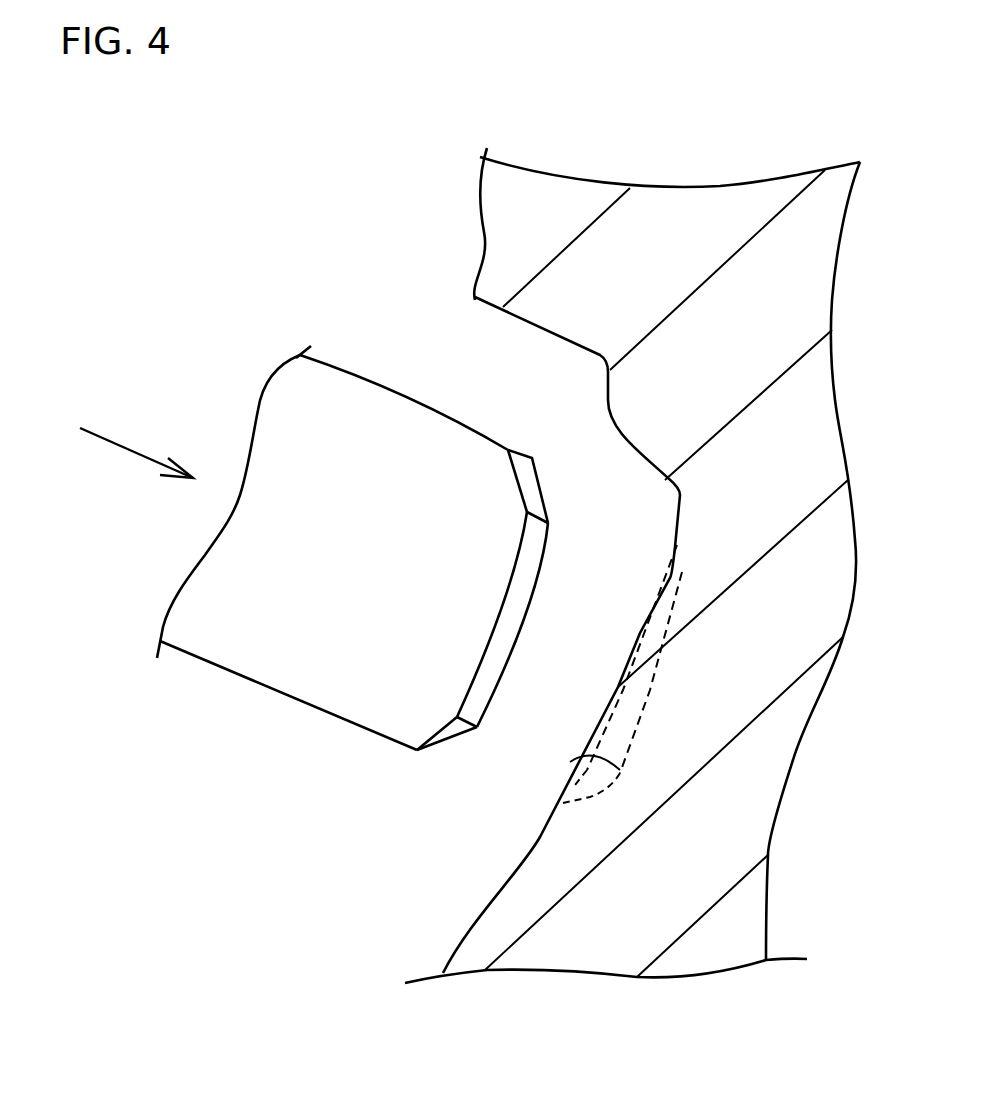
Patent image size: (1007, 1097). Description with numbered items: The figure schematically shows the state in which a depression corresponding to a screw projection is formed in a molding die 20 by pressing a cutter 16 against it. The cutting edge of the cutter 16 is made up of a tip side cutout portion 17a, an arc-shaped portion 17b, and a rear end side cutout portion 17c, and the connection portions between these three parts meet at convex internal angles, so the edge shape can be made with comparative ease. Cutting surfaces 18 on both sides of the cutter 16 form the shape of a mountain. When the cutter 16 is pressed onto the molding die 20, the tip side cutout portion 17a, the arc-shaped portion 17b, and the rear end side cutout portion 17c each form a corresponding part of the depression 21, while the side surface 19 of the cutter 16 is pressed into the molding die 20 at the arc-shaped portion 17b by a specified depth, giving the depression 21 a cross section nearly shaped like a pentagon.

The cutter 16 is at (402, 531).
The tip side cutout portion 17a is at (530, 483).
The arc-shaped portion 17b is at (528, 577).
The rear end side cutout portion 17c is at (437, 737).
The cutting surfaces 18 is at (492, 673).
The side surface 19 is at (405, 678).
The molding die 20 is at (687, 210).
The depression 21 is at (577, 758).